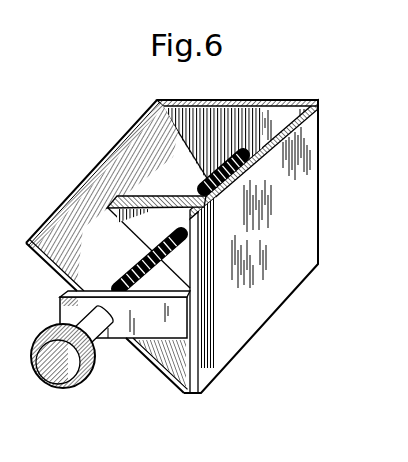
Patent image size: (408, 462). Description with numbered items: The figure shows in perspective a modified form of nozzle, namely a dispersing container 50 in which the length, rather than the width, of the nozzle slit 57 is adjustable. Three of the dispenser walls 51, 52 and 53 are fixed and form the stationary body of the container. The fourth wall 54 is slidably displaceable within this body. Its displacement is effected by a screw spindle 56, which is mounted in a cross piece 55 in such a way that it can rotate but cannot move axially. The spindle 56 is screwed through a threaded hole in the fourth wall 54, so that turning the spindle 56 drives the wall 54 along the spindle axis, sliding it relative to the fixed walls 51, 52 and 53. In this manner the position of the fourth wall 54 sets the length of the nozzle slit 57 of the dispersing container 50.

The dispersing container 50 is at (327, 156).
The dispenser wall 51 is at (304, 264).
The dispenser wall 52 is at (259, 115).
The dispenser wall 53 is at (130, 152).
The fourth wall 54 is at (136, 232).
The cross piece 55 is at (150, 330).
The screw spindle 56 is at (67, 388).
The nozzle slit 57 is at (195, 394).